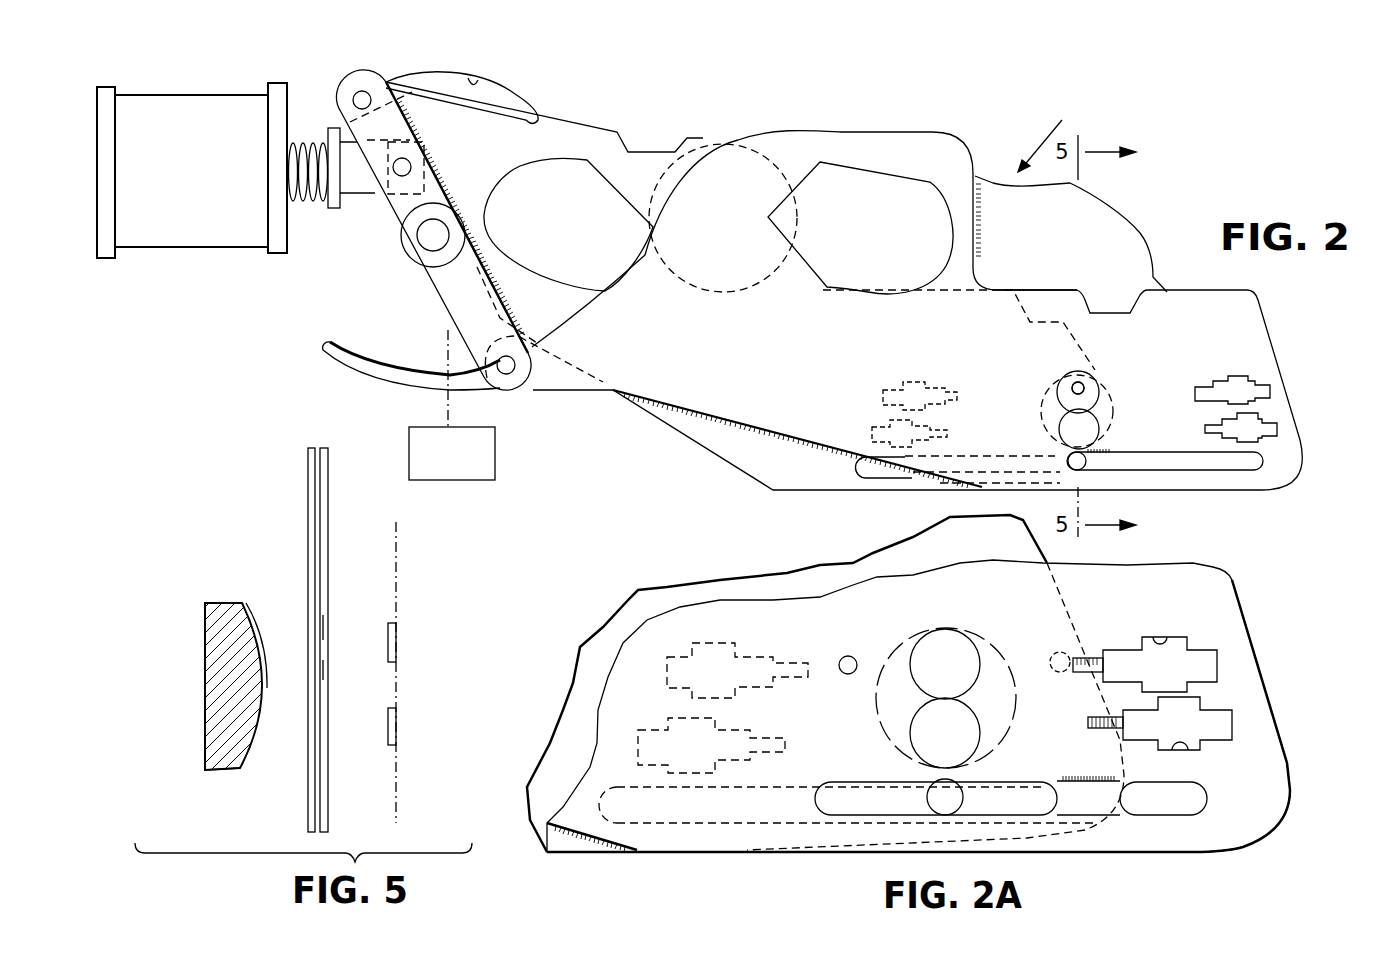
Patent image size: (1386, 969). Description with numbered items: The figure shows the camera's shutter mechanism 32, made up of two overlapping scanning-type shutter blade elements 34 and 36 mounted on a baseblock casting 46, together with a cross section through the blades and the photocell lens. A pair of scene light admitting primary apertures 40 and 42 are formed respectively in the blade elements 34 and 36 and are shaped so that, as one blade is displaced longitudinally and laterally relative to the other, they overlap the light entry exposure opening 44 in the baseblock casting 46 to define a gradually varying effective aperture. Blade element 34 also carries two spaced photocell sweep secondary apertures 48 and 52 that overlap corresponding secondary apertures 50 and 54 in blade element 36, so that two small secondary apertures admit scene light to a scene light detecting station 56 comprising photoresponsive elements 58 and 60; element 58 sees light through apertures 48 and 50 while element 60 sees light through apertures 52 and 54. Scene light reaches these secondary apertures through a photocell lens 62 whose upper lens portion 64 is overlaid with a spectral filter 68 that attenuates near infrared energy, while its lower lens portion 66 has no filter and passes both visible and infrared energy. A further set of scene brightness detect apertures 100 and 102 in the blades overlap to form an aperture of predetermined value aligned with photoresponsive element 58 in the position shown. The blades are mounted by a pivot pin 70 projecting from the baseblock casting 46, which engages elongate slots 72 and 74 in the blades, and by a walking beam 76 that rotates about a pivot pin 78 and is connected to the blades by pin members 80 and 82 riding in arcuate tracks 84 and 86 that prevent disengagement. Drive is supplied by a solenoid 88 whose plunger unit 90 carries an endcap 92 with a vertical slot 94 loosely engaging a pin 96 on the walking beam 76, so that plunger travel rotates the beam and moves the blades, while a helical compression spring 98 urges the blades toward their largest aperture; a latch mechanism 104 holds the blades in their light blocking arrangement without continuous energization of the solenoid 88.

In FIG. 2, the shutter mechanism 32 is at (1050, 134).
In FIG. 2, the shutter blade element 34 is at (590, 127).
In FIG. 5, the shutter blade element 34 is at (325, 492).
In FIG. 2, the shutter blade element 36 is at (1205, 290).
In FIG. 5, the shutter blade element 36 is at (308, 492).
In FIG. 2A, the shutter blade element 36 is at (918, 706).
In FIG. 2, the scene light admitting primary aperture 40 is at (600, 172).
In FIG. 2, the scene light admitting primary aperture 42 is at (860, 172).
In FIG. 2, the light entry exposure opening 44 is at (657, 150).
In FIG. 2, the baseblock casting 46 is at (1040, 233).
In FIG. 2, the photocell sweep secondary aperture 48 is at (912, 385).
In FIG. 2A, the photocell sweep secondary aperture 48 is at (740, 650).
In FIG. 2, the photocell sweep secondary aperture 50 is at (1253, 383).
In FIG. 2A, the photocell sweep secondary aperture 50 is at (1160, 640).
In FIG. 2, the photocell sweep secondary aperture 52 is at (872, 432).
In FIG. 2A, the photocell sweep secondary aperture 52 is at (745, 735).
In FIG. 2, the photocell sweep secondary aperture 54 is at (1262, 432).
In FIG. 2A, the photocell sweep secondary aperture 54 is at (1180, 752).
In FIG. 2, the scene light detecting station 56 is at (1103, 392).
In FIG. 2A, the scene light detecting station 56 is at (912, 630).
In FIG. 2, the photoresponsive element 58 is at (1056, 388).
In FIG. 5, the photoresponsive element 58 is at (396, 635).
In FIG. 2A, the photoresponsive element 58 is at (975, 660).
In FIG. 2, the photoresponsive element 60 is at (1100, 430).
In FIG. 5, the photoresponsive element 60 is at (396, 715).
In FIG. 2A, the photoresponsive element 60 is at (985, 740).
In FIG. 5, the photocell lens 62 is at (205, 610).
In FIG. 5, the upper lens portion 64 is at (226, 603).
In FIG. 5, the lower lens portion 66 is at (205, 725).
In FIG. 5, the spectral filter 68 is at (258, 625).
In FIG. 2, the pivot pin 70 is at (1081, 470).
In FIG. 2A, the pivot pin 70 is at (950, 800).
In FIG. 2, the elongate slot 72 is at (887, 477).
In FIG. 2A, the elongate slot 72 is at (870, 810).
In FIG. 2, the elongate slot 74 is at (1240, 468).
In FIG. 2A, the elongate slot 74 is at (1140, 815).
In FIG. 2, the walking beam 76 is at (443, 306).
In FIG. 2, the pivot pin 78 is at (420, 240).
In FIG. 2, the pin member 80 is at (367, 93).
In FIG. 2, the pin member 82 is at (537, 347).
In FIG. 2, the arcuate track 84 is at (482, 80).
In FIG. 2, the arcuate track 86 is at (392, 380).
In FIG. 2, the solenoid 88 is at (190, 95).
In FIG. 2, the plunger unit 90 is at (310, 203).
In FIG. 2, the endcap 92 is at (348, 196).
In FIG. 2, the vertical slot 94 is at (416, 143).
In FIG. 2, the pin 96 is at (411, 166).
In FIG. 2, the helical compression spring 98 is at (297, 138).
In FIG. 2, the scene brightness detect aperture 100 is at (1082, 385).
In FIG. 2A, the scene brightness detect aperture 100 is at (1065, 655).
In FIG. 2, the scene brightness detect aperture 102 is at (1078, 388).
In FIG. 2A, the scene brightness detect aperture 102 is at (850, 657).
In FIG. 2, the latch mechanism 104 is at (497, 450).